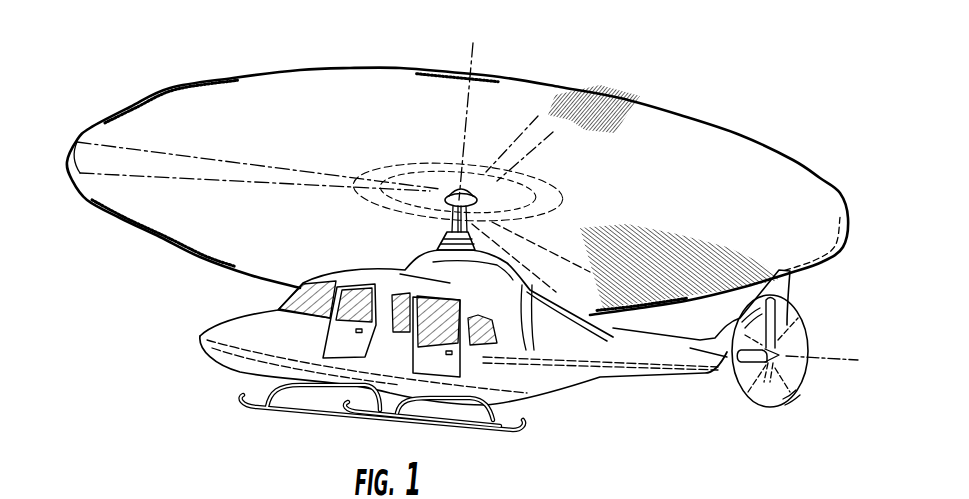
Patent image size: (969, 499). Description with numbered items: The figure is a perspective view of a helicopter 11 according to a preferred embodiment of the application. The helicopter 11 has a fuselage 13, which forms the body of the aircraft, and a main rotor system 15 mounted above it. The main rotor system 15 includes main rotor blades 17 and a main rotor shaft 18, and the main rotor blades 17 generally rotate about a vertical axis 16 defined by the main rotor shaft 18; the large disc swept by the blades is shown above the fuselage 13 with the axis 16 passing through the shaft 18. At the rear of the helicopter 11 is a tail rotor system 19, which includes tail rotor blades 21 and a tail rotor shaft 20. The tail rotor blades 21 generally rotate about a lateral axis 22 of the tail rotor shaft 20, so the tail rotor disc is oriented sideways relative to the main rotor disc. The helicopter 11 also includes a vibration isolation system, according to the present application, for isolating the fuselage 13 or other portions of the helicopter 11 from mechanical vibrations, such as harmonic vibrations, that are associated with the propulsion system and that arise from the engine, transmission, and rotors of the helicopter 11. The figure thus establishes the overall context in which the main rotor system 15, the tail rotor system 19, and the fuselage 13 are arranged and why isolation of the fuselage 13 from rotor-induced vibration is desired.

The helicopter 11 is at (640, 74).
The fuselage 13 is at (246, 366).
The main rotor system 15 is at (522, 238).
The vertical axis 16 is at (465, 134).
The main rotor blades 17 is at (218, 163).
The main rotor shaft 18 is at (447, 216).
The tail rotor system 19 is at (778, 425).
The tail rotor shaft 20 is at (752, 361).
The tail rotor blades 21 is at (791, 326).
The lateral axis 22 is at (825, 359).